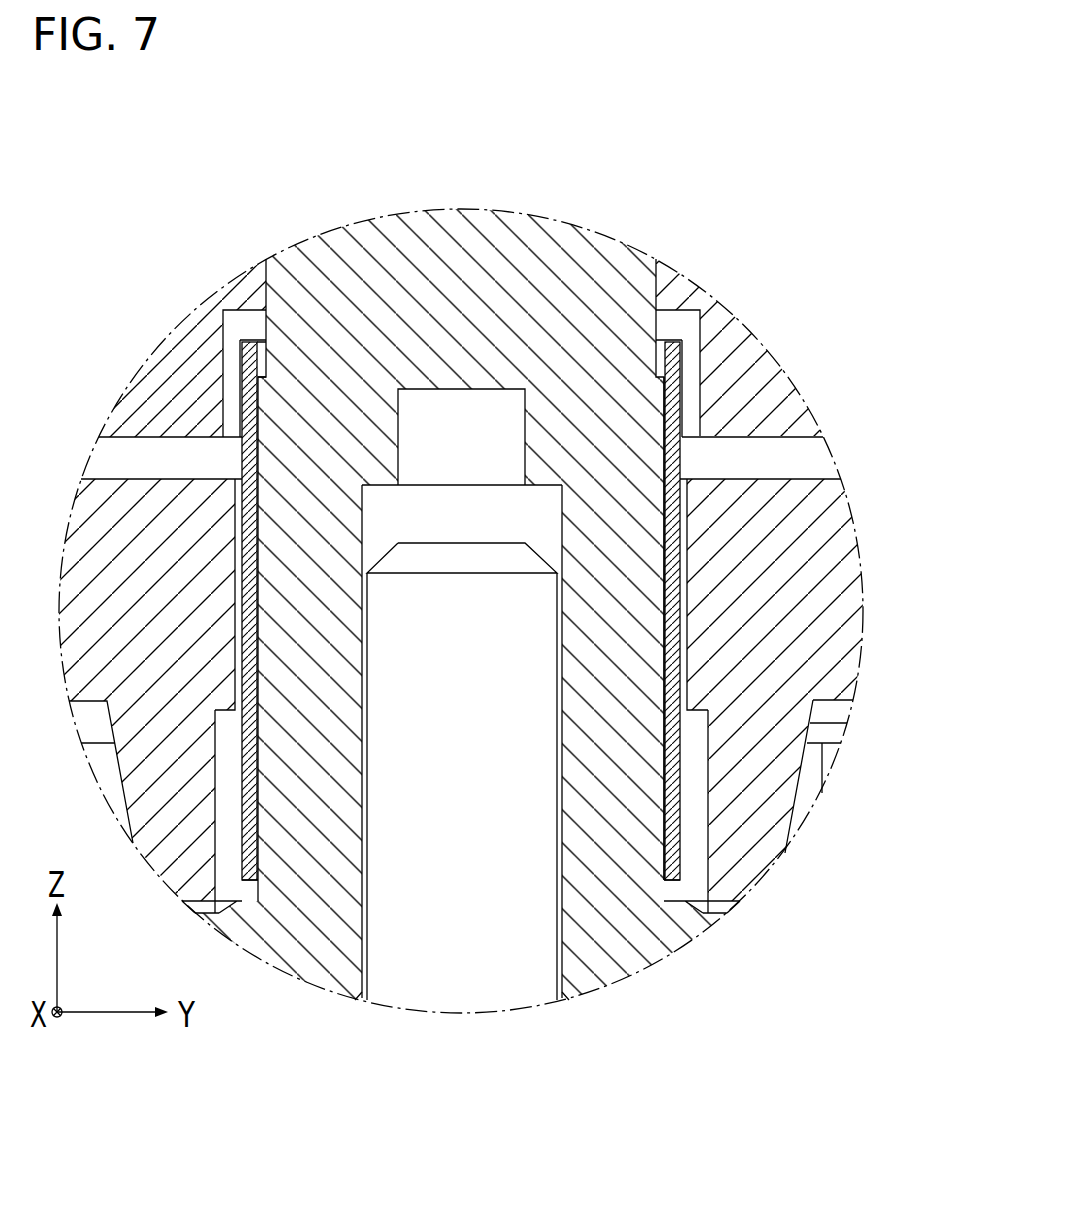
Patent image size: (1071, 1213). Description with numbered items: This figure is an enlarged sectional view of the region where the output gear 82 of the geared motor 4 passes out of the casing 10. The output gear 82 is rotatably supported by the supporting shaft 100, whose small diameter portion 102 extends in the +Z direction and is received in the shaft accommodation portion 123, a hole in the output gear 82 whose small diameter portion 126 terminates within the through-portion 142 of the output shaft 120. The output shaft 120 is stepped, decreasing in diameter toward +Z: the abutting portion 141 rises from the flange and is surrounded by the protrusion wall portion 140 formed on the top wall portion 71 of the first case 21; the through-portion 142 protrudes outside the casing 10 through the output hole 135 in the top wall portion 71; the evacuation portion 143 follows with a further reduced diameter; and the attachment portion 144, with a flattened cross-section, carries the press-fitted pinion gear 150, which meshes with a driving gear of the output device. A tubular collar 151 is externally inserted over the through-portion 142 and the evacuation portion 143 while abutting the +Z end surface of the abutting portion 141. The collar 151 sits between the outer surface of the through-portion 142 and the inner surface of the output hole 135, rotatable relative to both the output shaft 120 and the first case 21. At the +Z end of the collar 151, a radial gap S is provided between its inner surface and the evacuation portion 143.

The geared motor 4 is at (500, 579).
The output gear 82 is at (603, 230).
The attachment portion 144 is at (463, 228).
The shaft accommodation portion 123 is at (550, 524).
The gap S is at (264, 356).
The output shaft 120 is at (262, 274).
The evacuation portion 143 is at (648, 360).
The pinion gear 150 is at (733, 330).
The output hole 135 is at (248, 505).
The collar 151 is at (681, 357).
The casing 10 is at (510, 434).
The first case 21 is at (776, 476).
The top wall portion 71 is at (800, 488).
The supporting shaft 100 is at (572, 628).
The small diameter portion 102 is at (540, 686).
The through-portion 142 is at (645, 745).
The protrusion wall portion 140 is at (783, 800).
The abutting portion 141 is at (672, 888).
The small diameter portion 126 is at (557, 928).